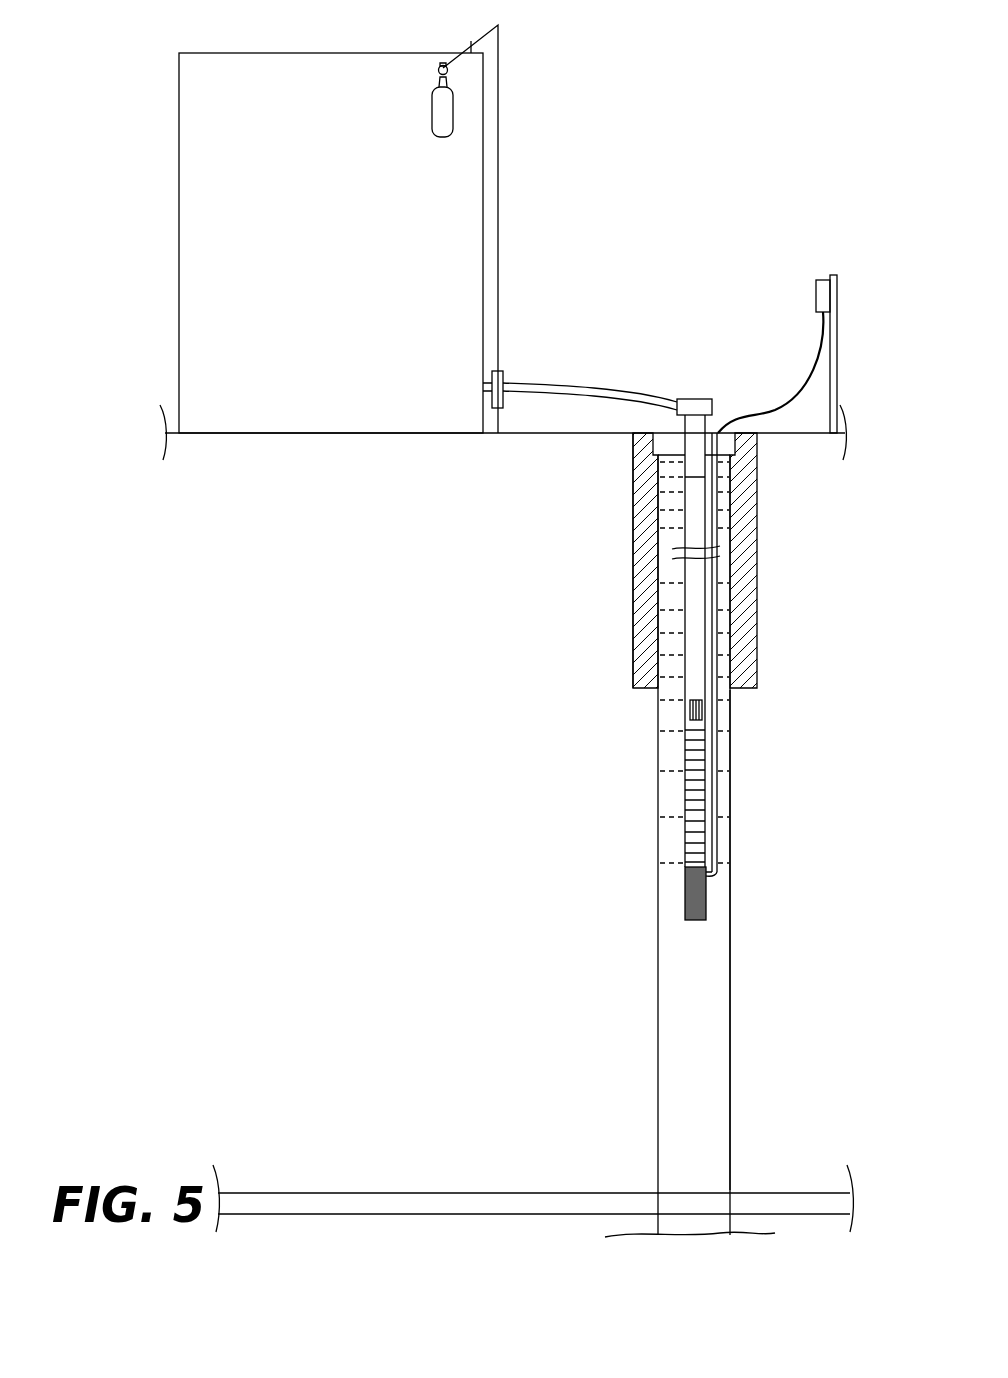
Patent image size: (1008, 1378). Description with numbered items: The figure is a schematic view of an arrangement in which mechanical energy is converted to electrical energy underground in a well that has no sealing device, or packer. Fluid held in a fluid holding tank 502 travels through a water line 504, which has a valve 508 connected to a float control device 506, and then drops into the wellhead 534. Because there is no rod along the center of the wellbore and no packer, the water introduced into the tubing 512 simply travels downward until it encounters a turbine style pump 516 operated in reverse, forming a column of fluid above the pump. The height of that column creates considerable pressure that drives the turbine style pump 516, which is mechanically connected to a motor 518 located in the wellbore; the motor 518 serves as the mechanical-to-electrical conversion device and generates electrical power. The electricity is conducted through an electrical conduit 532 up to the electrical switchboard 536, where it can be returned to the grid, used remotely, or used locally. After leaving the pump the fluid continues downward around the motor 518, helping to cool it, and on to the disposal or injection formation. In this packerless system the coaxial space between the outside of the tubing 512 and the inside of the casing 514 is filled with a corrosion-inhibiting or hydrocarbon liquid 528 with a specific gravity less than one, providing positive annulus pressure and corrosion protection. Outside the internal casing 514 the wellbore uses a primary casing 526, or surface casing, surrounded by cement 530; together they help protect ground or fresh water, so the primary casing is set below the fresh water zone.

The fluid holding tank 502 is at (346, 253).
The water line 504 is at (527, 385).
The float control device 506 is at (504, 81).
The valve 508 is at (502, 413).
The tubing 512 is at (705, 591).
The casing 514 is at (737, 738).
The turbine style pump 516 is at (700, 843).
The motor 518 is at (709, 888).
The primary casing 526 is at (631, 582).
The corrosion-inhibiting or hydrocarbon liquid 528 is at (673, 745).
The cement 530 is at (641, 505).
The electrical conduit 532 is at (807, 357).
The wellhead 534 is at (716, 411).
The electrical switchboard 536 is at (823, 280).